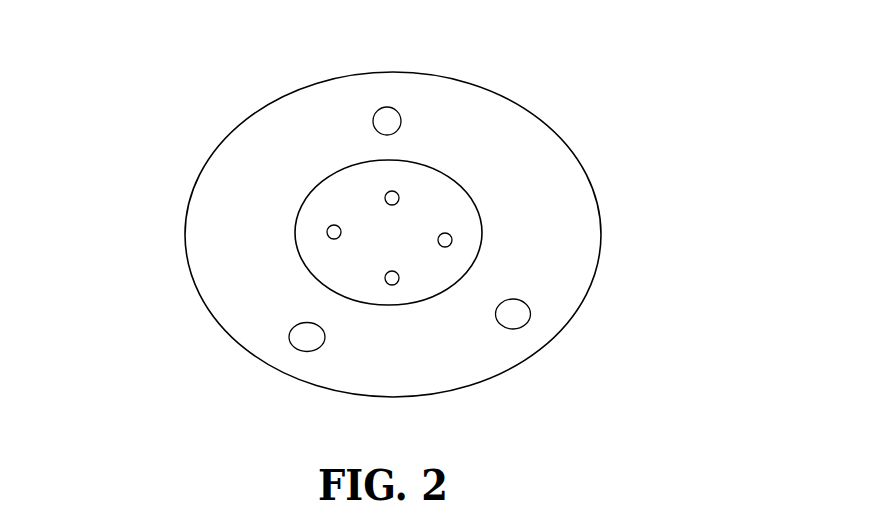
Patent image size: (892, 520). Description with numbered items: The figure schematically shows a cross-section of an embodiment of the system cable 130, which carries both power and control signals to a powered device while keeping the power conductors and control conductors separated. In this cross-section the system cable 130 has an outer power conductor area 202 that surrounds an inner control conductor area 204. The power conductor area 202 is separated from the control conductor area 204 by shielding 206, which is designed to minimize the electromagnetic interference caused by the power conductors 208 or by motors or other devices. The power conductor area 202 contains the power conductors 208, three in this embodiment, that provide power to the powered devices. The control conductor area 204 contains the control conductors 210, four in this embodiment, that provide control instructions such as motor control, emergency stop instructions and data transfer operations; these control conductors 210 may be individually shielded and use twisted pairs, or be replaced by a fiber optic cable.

The system cable 130 is at (153, 110).
The power conductor area 202 is at (250, 188).
The control conductor area 204 is at (440, 211).
The shielding 206 is at (433, 166).
The power conductors 208 is at (325, 339).
The control conductors 210 is at (399, 278).